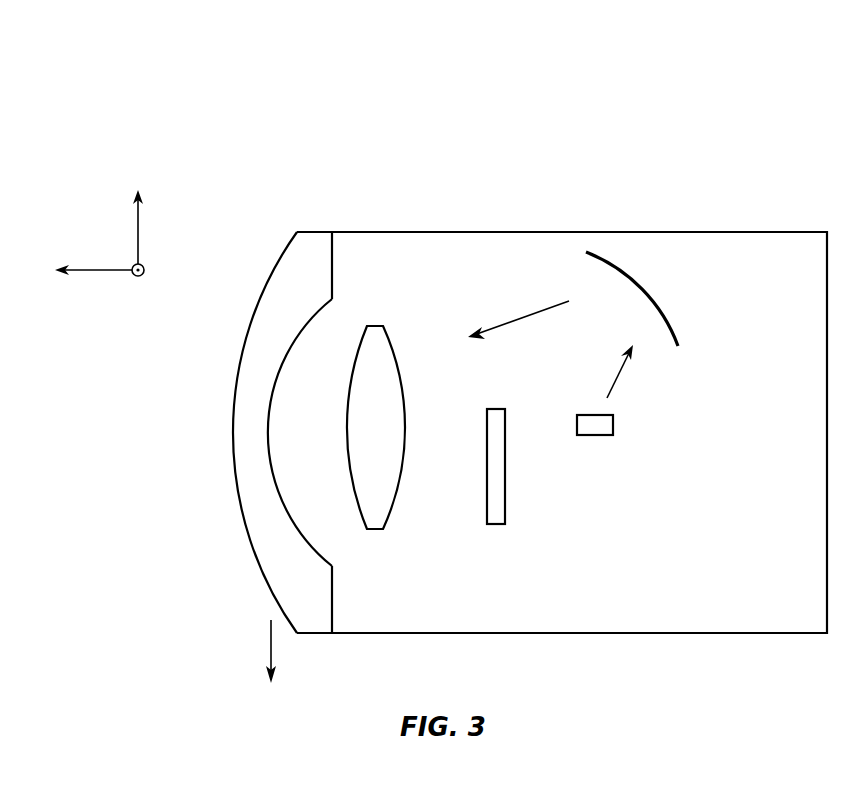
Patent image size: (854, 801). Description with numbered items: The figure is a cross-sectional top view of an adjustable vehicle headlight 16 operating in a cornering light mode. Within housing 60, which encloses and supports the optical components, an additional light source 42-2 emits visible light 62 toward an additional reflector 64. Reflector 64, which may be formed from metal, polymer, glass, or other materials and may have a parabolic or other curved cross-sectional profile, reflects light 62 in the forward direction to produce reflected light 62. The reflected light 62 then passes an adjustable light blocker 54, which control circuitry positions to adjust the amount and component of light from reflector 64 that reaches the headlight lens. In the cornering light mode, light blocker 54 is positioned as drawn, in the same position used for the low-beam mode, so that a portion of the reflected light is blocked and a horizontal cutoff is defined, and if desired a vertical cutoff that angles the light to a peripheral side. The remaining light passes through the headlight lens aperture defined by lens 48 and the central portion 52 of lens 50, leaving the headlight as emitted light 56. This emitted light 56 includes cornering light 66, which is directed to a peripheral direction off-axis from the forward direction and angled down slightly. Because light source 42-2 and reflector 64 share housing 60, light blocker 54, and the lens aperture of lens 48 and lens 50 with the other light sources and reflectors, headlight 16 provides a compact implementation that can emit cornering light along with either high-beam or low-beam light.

The headlight 16 is at (695, 77).
The lens 50 is at (315, 240).
The central portion 52 is at (286, 431).
The lens 48 is at (375, 527).
The light blocker 54 is at (494, 520).
The light source 42-2 is at (595, 430).
The housing 60 is at (630, 232).
The light 62 is at (510, 318).
The reflector 64 is at (647, 292).
The light 66 is at (268, 645).
The emitted light 56 is at (115, 654).